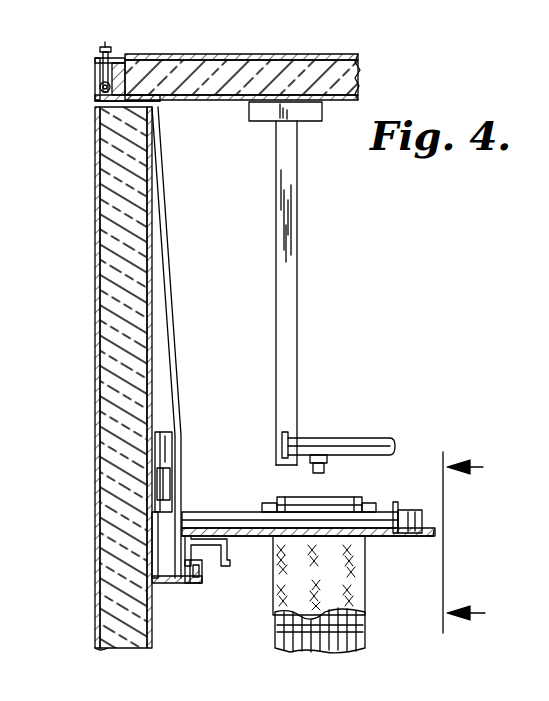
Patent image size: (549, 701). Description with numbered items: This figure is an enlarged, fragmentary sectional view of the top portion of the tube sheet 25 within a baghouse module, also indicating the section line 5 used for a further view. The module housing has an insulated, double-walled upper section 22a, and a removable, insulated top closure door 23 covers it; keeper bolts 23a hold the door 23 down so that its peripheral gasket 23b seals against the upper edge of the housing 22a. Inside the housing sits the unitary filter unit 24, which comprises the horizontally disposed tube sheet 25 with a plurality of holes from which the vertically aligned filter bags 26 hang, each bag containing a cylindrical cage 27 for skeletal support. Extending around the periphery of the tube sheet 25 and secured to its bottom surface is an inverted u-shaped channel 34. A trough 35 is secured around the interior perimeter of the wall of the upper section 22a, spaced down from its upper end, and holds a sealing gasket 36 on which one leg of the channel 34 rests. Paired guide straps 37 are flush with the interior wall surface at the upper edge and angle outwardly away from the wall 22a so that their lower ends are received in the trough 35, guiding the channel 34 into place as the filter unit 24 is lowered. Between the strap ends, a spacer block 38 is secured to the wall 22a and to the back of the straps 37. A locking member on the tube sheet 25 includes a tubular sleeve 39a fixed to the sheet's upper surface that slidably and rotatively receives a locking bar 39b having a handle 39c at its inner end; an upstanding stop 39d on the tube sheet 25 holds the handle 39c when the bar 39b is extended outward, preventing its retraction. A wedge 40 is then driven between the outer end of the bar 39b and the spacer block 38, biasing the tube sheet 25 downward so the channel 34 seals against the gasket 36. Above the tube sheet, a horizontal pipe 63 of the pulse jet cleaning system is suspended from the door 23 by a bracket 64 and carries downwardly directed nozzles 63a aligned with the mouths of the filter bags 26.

The top closure door 23 is at (242, 63).
The keeper bolts 23a is at (97, 60).
The peripheral gasket 23b is at (152, 101).
The upper section 22a is at (97, 251).
The guide straps 37 is at (163, 248).
The brackets 64 is at (283, 260).
The horizontal pipes 63 is at (347, 443).
The nozzles 63a is at (327, 462).
The filter unit 24 is at (411, 450).
The spacer block 38 is at (172, 446).
The wedge 40 is at (168, 487).
The locking bar 39b is at (186, 515).
The tubular sleeve 39a is at (250, 515).
The handle 39c is at (402, 490).
The stop 39d is at (422, 518).
The tube sheet 25 is at (430, 540).
The u-shaped channel 34 is at (229, 563).
The trough 35 is at (165, 583).
The sealing gasket 36 is at (200, 583).
The filter bags 26 is at (365, 572).
The cages 27 is at (365, 630).
The section line 5 is at (479, 542).